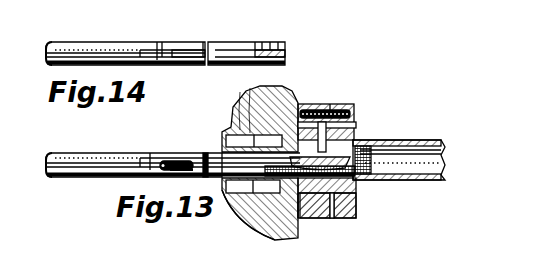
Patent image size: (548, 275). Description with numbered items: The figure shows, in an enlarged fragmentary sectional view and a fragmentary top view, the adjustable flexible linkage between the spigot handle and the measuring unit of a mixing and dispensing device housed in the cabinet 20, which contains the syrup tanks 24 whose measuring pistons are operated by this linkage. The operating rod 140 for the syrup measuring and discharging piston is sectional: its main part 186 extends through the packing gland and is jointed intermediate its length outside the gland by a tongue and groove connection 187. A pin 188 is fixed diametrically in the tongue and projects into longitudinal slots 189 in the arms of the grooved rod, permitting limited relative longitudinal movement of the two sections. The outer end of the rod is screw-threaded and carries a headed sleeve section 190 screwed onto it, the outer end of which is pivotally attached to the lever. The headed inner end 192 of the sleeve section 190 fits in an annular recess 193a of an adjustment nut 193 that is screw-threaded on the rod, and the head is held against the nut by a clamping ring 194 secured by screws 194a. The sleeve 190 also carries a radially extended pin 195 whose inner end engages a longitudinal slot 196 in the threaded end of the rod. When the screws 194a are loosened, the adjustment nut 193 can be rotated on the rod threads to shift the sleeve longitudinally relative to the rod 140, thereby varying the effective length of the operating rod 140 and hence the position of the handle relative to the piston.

In FIG. 13, the cabinet 20 is at (296, 94).
In FIG. 13, the syrup tank 24 is at (246, 232).
In FIG. 13, the operating rod 140 is at (60, 153).
In FIG. 14, the operating rod 140 is at (62, 46).
In FIG. 13, the main part 186 is at (49, 165).
In FIG. 14, the main part 186 is at (49, 53).
In FIG. 13, the tongue and groove connection 187 is at (222, 150).
In FIG. 14, the tongue and groove connection 187 is at (205, 41).
In FIG. 13, the pin 188 is at (161, 163).
In FIG. 14, the pin 188 is at (162, 50).
In FIG. 13, the longitudinal slots 189 is at (185, 164).
In FIG. 14, the longitudinal slots 189 is at (186, 42).
In FIG. 13, the headed sleeve section 190 is at (408, 141).
In FIG. 13, the headed inner end 192 is at (356, 202).
In FIG. 13, the adjustment nut 193 is at (315, 219).
In FIG. 13, the annular recess 193a is at (300, 220).
In FIG. 13, the clamping ring 194 is at (342, 219).
In FIG. 13, the screws 194a is at (345, 108).
In FIG. 13, the radially extended pin 195 is at (344, 119).
In FIG. 13, the longitudinal slot 196 is at (352, 152).
In FIG. 14, the longitudinal slot 196 is at (263, 46).